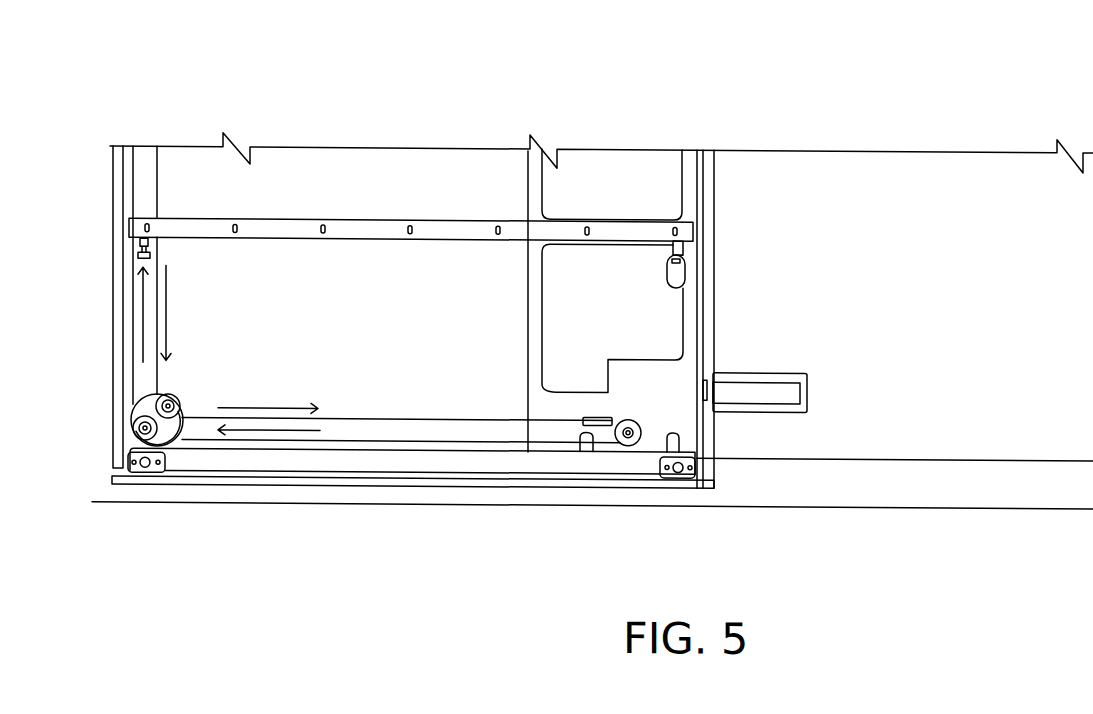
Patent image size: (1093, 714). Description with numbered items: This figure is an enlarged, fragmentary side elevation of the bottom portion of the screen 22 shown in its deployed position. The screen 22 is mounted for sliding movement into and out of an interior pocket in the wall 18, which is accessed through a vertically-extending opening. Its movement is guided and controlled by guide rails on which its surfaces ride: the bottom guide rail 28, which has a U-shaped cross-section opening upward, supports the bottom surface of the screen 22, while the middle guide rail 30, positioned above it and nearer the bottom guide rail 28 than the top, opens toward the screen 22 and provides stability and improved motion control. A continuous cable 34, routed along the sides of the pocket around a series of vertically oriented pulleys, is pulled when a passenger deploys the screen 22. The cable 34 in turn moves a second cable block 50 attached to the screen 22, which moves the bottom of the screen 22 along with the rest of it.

The wall 18 is at (372, 161).
The middle guide rail 30 is at (217, 227).
The bottom guide rail 28 is at (262, 459).
The cable 34 is at (337, 440).
The second cable block 50 is at (602, 422).
The screen 22 is at (884, 414).